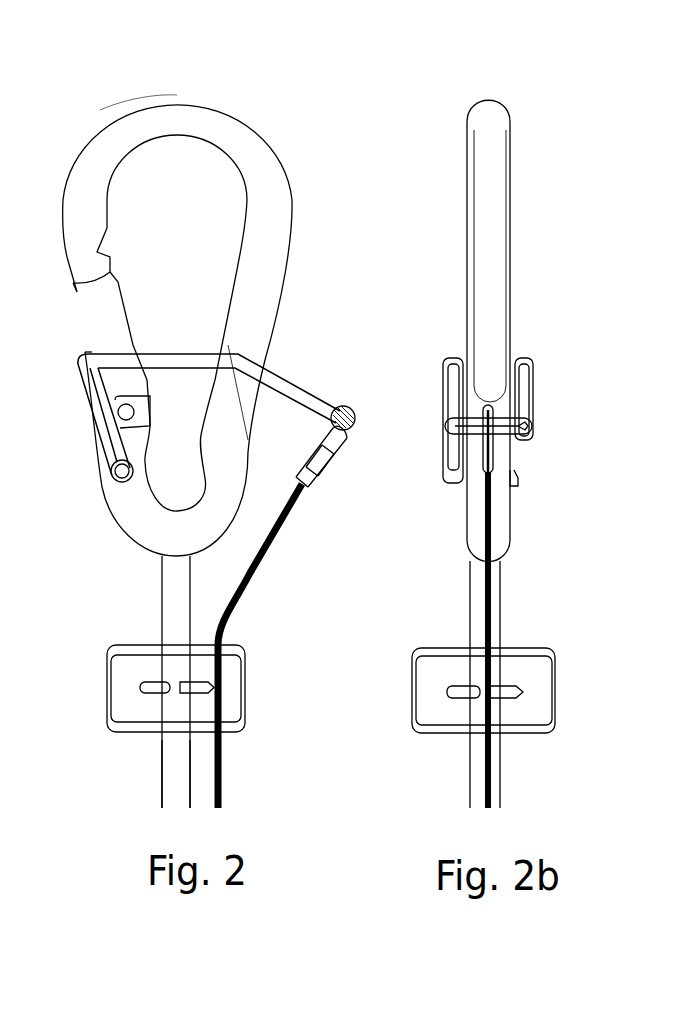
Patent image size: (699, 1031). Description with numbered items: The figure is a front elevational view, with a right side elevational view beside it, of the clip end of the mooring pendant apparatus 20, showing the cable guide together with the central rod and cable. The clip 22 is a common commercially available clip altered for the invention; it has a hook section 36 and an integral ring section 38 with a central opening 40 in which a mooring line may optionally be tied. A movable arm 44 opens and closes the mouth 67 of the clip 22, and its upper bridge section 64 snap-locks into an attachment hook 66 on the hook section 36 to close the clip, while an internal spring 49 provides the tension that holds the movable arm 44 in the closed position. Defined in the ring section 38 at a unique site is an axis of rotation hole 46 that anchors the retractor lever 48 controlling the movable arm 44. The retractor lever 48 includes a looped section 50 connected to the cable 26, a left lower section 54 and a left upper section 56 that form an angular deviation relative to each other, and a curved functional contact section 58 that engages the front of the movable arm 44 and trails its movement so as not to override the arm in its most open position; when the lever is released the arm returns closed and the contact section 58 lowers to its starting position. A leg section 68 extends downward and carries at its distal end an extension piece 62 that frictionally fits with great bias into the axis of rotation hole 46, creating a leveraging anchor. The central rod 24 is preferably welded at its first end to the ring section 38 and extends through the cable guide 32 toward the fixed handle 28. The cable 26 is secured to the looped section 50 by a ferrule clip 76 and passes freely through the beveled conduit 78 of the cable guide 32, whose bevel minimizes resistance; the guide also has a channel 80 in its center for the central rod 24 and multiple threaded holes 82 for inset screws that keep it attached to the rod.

In FIG. 2, the mooring pendant apparatus 20 is at (262, 68).
In FIG. 2B, the mooring pendant apparatus 20 is at (523, 73).
In FIG. 2, the clip 22 is at (288, 169).
In FIG. 2B, the clip 22 is at (488, 251).
In FIG. 2, the central rod 24 is at (160, 616).
In FIG. 2B, the central rod 24 is at (470, 598).
In FIG. 2, the cable 26 is at (256, 575).
In FIG. 2, the fixed handle 28 is at (158, 562).
In FIG. 2B, the fixed handle 28 is at (493, 581).
In FIG. 2, the cable guide 32 is at (246, 665).
In FIG. 2B, the cable guide 32 is at (483, 690).
In FIG. 2, the hook section 36 is at (115, 114).
In FIG. 2, the ring section 38 is at (107, 512).
In FIG. 2B, the ring section 38 is at (488, 461).
In FIG. 2, the central opening 40 is at (155, 484).
In FIG. 2, the movable arm 44 is at (76, 298).
In FIG. 2, the axis of rotation hole 46 is at (111, 476).
In FIG. 2, the retractor lever 48 is at (302, 389).
In FIG. 2, the internal spring 49 is at (113, 425).
In FIG. 2, the looped section 50 is at (348, 432).
In FIG. 2B, the looped section 50 is at (533, 433).
In FIG. 2, the left lower section 54 is at (303, 331).
In FIG. 2, the left upper section 56 is at (160, 351).
In FIG. 2, the curved functional contact section 58 is at (80, 322).
In FIG. 2B, the curved functional contact section 58 is at (517, 361).
In FIG. 2B, the extension piece 62 is at (518, 484).
In FIG. 2, the upper bridge section 64 is at (108, 247).
In FIG. 2, the attachment hook 66 is at (106, 268).
In FIG. 2, the mouth 67 is at (168, 203).
In FIG. 2, the leg section 68 is at (84, 385).
In FIG. 2B, the leg section 68 is at (442, 388).
In FIG. 2, the ferrule clip 76 is at (315, 480).
In FIG. 2, the beveled conduit 78 is at (224, 642).
In FIG. 2, the channel 80 is at (165, 756).
In FIG. 2, the threaded holes 82 is at (141, 688).